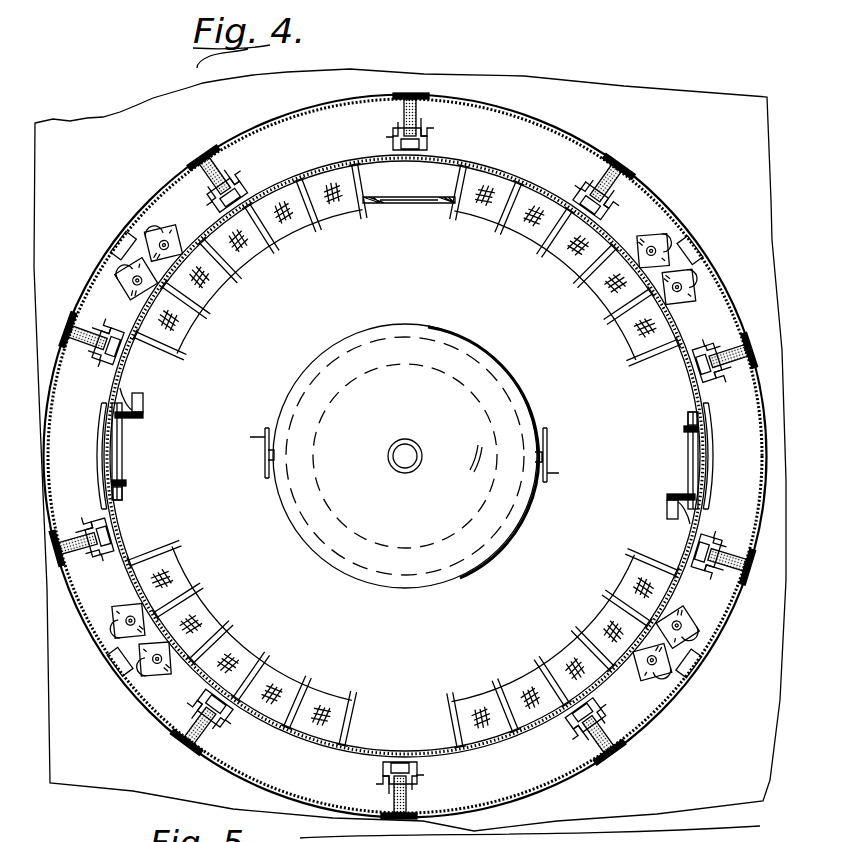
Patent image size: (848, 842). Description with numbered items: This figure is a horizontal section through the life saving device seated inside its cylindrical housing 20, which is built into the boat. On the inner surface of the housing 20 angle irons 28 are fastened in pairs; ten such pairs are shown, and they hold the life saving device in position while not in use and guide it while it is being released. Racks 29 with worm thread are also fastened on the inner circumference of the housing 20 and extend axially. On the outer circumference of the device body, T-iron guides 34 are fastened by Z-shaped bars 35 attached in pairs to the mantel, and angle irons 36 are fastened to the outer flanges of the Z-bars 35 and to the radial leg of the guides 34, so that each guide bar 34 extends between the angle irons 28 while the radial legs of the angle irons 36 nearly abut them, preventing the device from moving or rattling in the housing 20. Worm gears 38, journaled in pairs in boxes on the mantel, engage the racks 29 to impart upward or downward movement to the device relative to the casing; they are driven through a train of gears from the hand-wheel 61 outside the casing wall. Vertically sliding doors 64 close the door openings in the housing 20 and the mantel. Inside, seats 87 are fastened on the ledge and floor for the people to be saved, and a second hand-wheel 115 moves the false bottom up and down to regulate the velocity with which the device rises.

The housing 20 is at (78, 294).
The angle irons 28 is at (412, 94).
The racks 29 is at (112, 250).
The guides 34 is at (404, 112).
The Z-shaped bars 35 is at (393, 148).
The angle irons 36 is at (400, 134).
The worm gears 38 is at (162, 240).
The hand-wheel 61 is at (265, 456).
The doors 64 is at (100, 440).
The seats 87 is at (222, 262).
The hand-wheel 115 is at (548, 440).